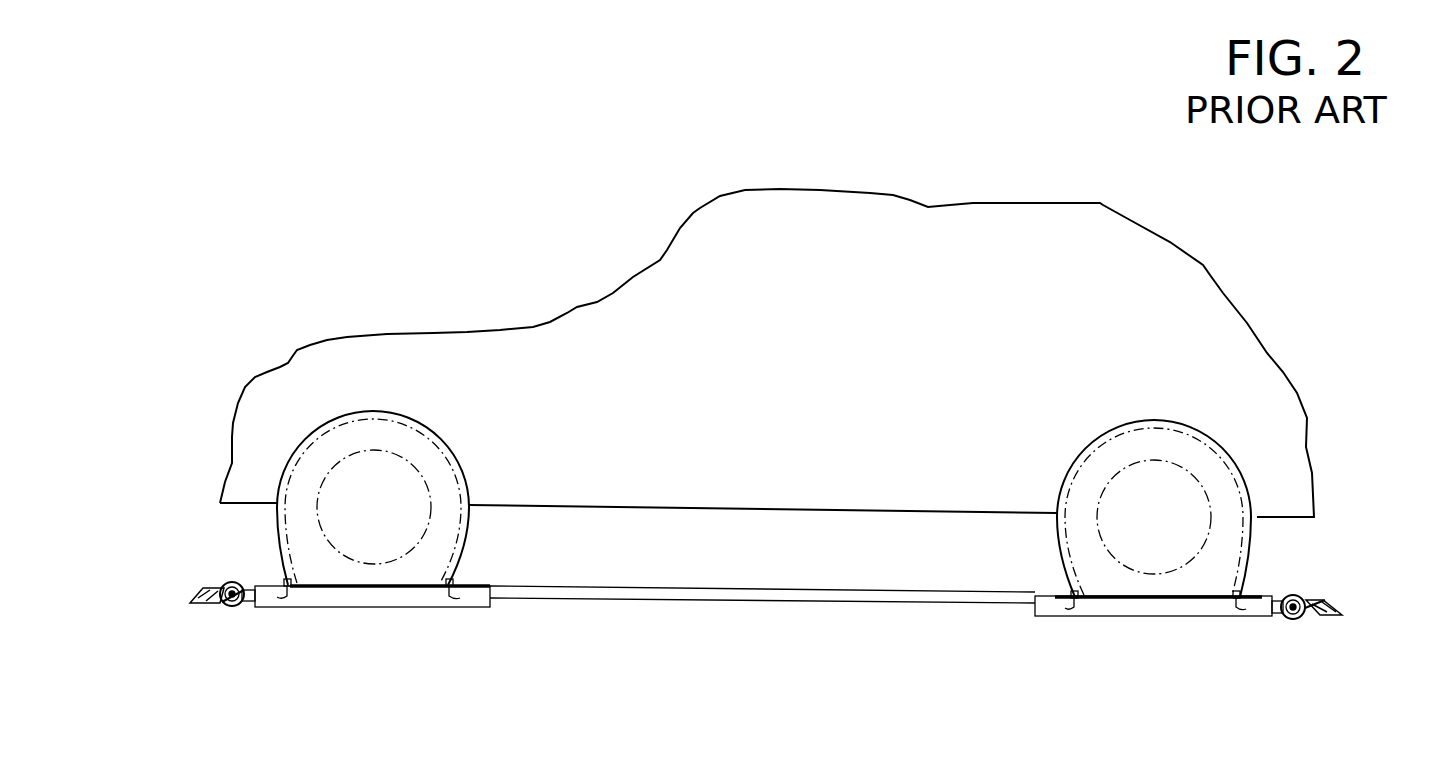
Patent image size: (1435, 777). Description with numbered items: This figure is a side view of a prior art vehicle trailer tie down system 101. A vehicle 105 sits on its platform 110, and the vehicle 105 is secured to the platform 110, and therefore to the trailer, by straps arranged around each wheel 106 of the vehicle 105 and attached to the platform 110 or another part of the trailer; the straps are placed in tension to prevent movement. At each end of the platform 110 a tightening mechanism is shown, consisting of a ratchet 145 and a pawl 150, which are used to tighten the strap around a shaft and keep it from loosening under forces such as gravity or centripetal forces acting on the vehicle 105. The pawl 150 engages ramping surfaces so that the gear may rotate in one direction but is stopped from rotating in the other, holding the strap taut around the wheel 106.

The vehicle trailer tie down system 101 is at (297, 265).
The vehicle 105 is at (642, 295).
The wheel 106 is at (417, 557).
The platform 110 is at (665, 600).
The ratchet 145 is at (236, 606).
The pawl 150 is at (188, 603).